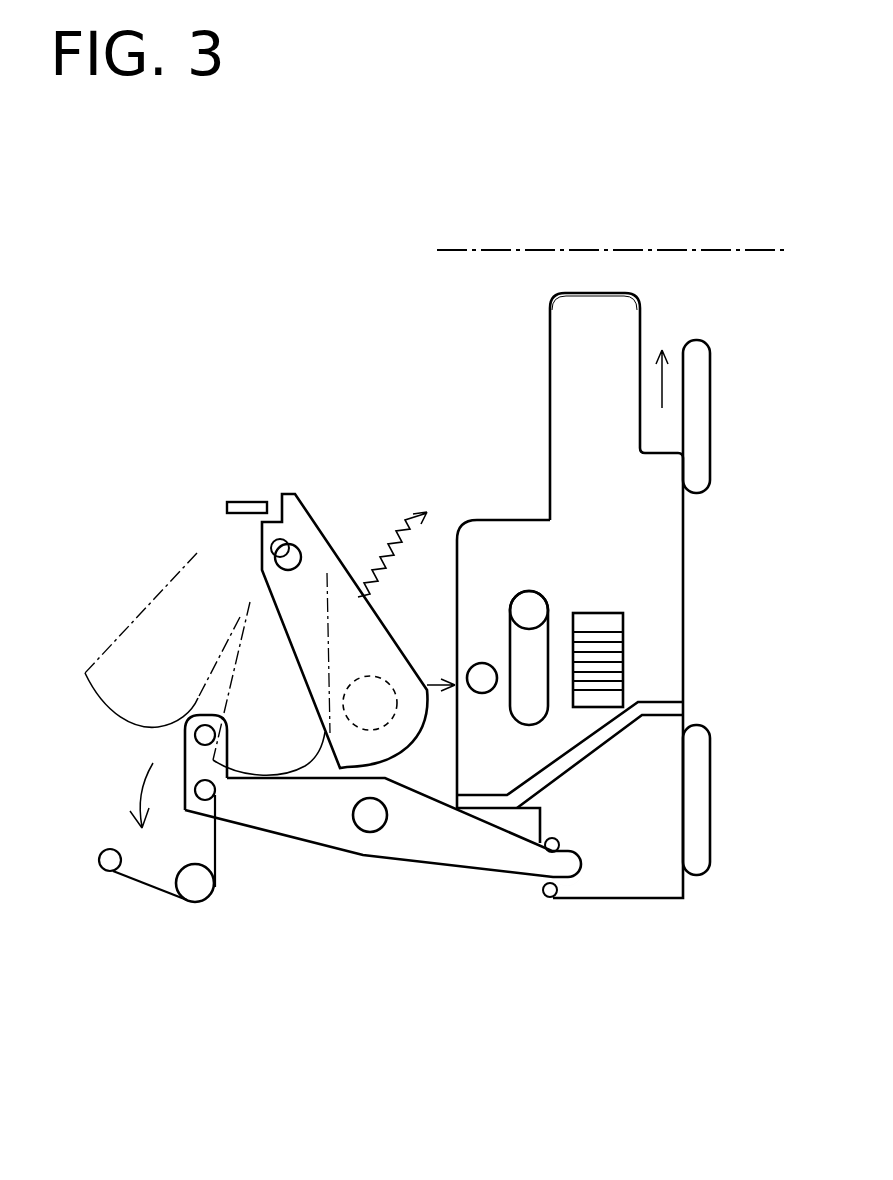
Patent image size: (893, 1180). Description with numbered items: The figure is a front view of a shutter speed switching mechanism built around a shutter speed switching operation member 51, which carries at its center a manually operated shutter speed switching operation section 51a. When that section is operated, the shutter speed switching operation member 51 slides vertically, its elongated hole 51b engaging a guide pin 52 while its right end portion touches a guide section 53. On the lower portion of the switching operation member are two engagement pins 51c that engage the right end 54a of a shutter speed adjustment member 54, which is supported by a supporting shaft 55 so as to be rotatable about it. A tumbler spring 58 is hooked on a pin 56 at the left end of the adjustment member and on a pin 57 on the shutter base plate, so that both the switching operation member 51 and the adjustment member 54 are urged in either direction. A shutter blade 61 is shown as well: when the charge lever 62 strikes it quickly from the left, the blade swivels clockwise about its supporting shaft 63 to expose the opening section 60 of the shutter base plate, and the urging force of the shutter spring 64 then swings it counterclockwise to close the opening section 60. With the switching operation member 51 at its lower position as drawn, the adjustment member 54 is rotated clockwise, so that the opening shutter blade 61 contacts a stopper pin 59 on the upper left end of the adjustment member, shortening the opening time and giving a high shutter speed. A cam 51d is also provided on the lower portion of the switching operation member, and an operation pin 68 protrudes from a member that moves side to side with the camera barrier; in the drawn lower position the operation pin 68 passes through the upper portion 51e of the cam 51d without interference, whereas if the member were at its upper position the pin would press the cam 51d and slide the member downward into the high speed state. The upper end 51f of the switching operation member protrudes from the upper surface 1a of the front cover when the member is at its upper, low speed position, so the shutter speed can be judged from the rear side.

The upper surface of the front cover 1a is at (497, 250).
The shutter speed switching operation member 51 is at (640, 900).
The shutter speed switching operation section 51a is at (624, 632).
The elongated hole 51b is at (535, 670).
The engagement pins 51c is at (553, 900).
The cam 51d is at (572, 723).
The upper portion of the cam 51e is at (657, 702).
The upper end 51f is at (600, 293).
The guide pin 52 is at (528, 598).
The guide section 53 is at (713, 413).
The shutter speed adjustment member 54 is at (423, 862).
The right end of the shutter speed adjustment member 54a is at (530, 877).
The supporting shaft 55 is at (372, 833).
The pin 56 is at (217, 793).
The pin 57 is at (99, 861).
The tumbler spring 58 is at (197, 903).
The stopper pin 59 is at (185, 737).
The opening section 60 is at (370, 678).
The shutter blade 61 is at (324, 542).
The charge lever 62 is at (250, 500).
The supporting shaft 63 is at (288, 546).
The shutter spring 64 is at (401, 540).
The operation pin 68 is at (482, 690).